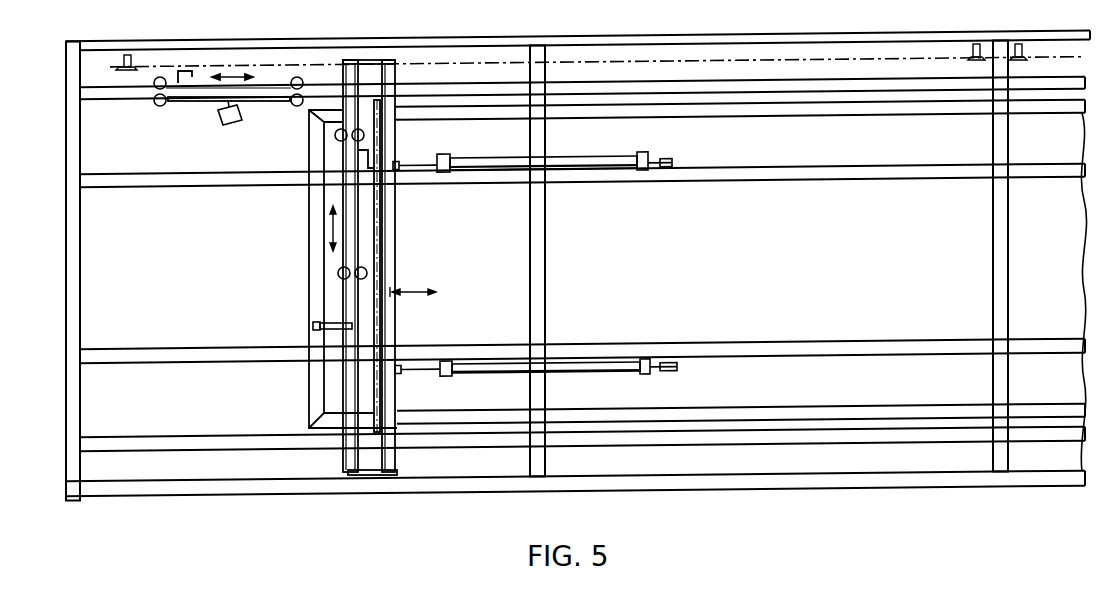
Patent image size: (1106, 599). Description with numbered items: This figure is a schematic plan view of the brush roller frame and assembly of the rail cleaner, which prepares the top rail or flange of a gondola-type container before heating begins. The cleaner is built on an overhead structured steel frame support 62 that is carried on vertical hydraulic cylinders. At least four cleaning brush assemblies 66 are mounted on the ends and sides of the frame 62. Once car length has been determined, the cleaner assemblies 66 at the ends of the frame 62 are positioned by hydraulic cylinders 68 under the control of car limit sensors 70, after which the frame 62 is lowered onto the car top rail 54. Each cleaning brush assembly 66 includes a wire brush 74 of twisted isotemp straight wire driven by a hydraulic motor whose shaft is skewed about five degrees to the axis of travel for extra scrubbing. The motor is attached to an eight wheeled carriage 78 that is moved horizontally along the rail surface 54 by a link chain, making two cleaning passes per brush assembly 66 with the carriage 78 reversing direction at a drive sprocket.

The frame support 62 is at (50, 66).
The car top rail 54 is at (309, 260).
The cleaning brush assembly 66 is at (257, 108).
The hydraulic cylinder 68 is at (599, 160).
The car limit sensor 70 is at (333, 325).
The wire brush 74 is at (218, 118).
The eight wheeled carriage 78 is at (156, 107).